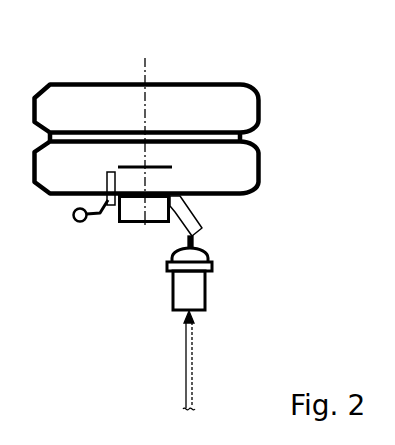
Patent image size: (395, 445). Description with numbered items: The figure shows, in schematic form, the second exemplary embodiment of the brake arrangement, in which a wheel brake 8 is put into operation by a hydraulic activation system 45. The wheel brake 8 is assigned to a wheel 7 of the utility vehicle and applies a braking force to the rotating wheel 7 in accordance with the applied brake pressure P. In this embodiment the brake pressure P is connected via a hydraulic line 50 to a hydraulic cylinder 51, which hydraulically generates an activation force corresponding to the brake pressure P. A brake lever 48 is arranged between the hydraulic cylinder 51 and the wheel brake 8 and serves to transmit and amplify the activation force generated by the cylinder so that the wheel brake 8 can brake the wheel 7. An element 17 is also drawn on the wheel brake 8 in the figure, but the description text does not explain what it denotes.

The wheel 7 is at (237, 170).
The valve stem with lever 17 is at (110, 172).
The wheel brake 8 is at (133, 237).
The brake lever 48 is at (213, 215).
The hydraulic activation system 45 is at (222, 266).
The hydraulic cylinder 51 is at (197, 290).
The hydraulic line 50 is at (186, 330).
The brake pressure P is at (192, 353).